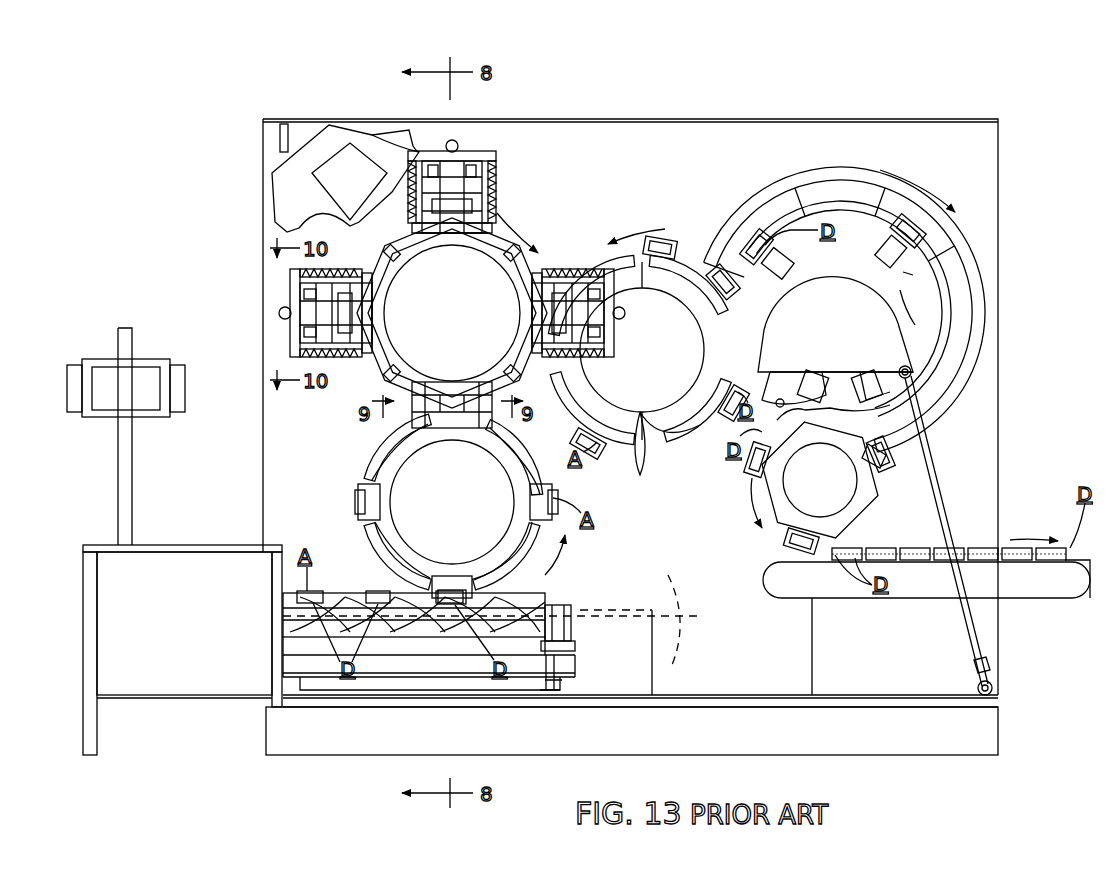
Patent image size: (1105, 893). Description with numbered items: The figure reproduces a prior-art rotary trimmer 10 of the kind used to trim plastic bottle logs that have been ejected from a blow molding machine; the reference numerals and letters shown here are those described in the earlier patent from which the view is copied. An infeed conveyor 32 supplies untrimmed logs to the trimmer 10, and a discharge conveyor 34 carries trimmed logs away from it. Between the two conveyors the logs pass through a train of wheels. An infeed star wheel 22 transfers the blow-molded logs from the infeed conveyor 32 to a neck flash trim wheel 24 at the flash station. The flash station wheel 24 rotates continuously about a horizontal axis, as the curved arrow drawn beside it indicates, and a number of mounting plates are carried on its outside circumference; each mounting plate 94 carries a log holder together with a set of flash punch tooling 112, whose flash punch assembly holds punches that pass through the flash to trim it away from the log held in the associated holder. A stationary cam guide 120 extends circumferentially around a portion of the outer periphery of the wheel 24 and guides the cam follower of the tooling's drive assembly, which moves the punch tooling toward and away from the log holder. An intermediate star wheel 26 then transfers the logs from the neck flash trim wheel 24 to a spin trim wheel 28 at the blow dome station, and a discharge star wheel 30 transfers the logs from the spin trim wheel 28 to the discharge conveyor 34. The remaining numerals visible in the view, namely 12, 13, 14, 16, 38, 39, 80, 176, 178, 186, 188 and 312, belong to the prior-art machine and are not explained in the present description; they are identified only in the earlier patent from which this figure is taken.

The rotary trimmer 10 is at (240, 112).
The operator station 12 is at (262, 210).
The enclosure 13 is at (628, 118).
The base 14 is at (280, 724).
The work area 16 is at (697, 162).
The infeed star wheel 22 is at (460, 509).
The neck flash trim wheel 24 is at (452, 284).
The intermediate star wheel 26 is at (648, 344).
The spin trim wheel 28 is at (844, 309).
The discharge star wheel 30 is at (820, 484).
The infeed conveyor 32 is at (578, 628).
The discharge conveyor 34 is at (763, 575).
The screw conveyor 38 is at (438, 630).
The infeed direction 39 is at (372, 582).
The drive housing 80 is at (648, 605).
The mounting plate 94 is at (447, 240).
The flash punch tooling 112 is at (557, 252).
The cam guide 120 is at (272, 184).
The arm pivot 176 is at (920, 340).
The cam follower 178 is at (662, 454).
The transfer plate 186 is at (822, 372).
The actuator rod 188 is at (932, 474).
The pad 312 is at (890, 478).